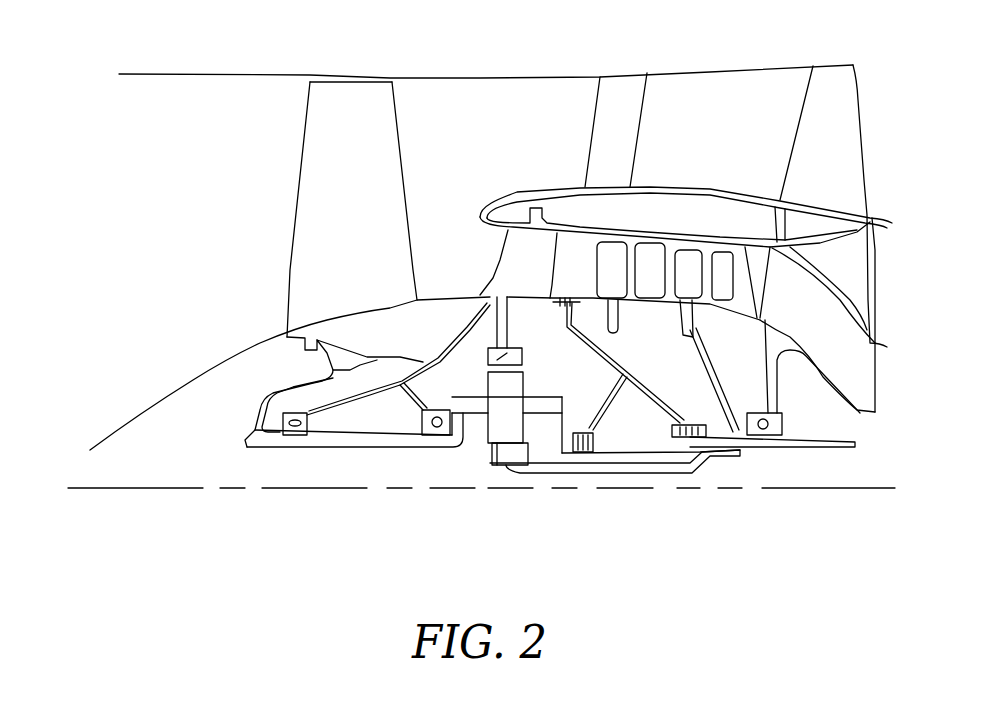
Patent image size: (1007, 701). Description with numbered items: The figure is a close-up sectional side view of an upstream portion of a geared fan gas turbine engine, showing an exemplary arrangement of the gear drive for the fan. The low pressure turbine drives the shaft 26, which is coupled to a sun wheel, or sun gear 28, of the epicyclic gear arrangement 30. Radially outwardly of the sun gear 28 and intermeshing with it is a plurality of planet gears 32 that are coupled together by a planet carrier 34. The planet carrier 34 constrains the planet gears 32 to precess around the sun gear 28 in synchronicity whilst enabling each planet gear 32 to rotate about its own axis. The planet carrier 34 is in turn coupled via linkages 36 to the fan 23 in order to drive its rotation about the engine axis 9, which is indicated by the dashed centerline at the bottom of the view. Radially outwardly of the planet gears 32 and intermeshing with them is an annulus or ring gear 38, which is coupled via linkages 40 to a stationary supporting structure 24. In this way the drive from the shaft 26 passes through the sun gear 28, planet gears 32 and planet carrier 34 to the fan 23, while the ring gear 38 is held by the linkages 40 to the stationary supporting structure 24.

The engine axis 9 is at (183, 490).
The fan 23 is at (310, 187).
The stationary supporting structure 24 is at (510, 265).
The shaft 26 is at (633, 468).
The sun gear 28 is at (507, 460).
The epicyclic gear arrangement 30 is at (478, 440).
The planet gears 32 is at (490, 440).
The planet carrier 34 is at (557, 427).
The linkages 36 is at (462, 445).
The ring gear 38 is at (455, 345).
The linkages 40 is at (490, 335).